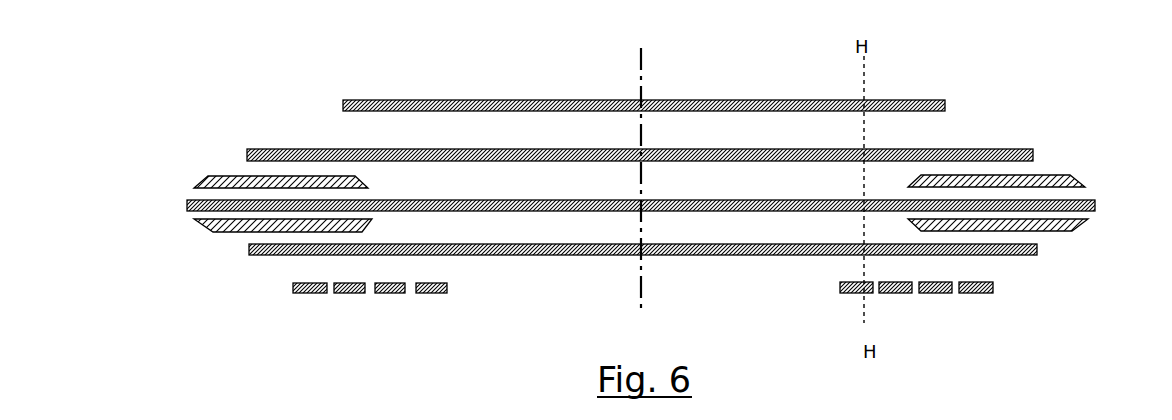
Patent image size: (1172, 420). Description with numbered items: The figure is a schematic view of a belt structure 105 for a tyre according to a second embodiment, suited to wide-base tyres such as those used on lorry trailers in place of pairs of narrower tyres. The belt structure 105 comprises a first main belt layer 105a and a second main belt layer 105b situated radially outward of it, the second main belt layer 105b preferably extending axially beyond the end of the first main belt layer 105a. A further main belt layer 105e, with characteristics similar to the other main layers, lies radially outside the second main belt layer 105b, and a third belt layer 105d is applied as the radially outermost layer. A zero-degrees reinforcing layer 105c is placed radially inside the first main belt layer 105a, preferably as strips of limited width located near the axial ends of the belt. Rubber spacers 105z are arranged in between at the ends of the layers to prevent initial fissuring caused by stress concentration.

The belt structure 105 is at (727, 85).
The first main belt layer 105a is at (248, 257).
The second main belt layer 105b is at (187, 201).
The zero-degrees reinforcing layer 105c is at (340, 293).
The third belt layer 105d is at (935, 100).
The further main belt layer 105e is at (267, 150).
The rubber spacers 105z is at (208, 176).